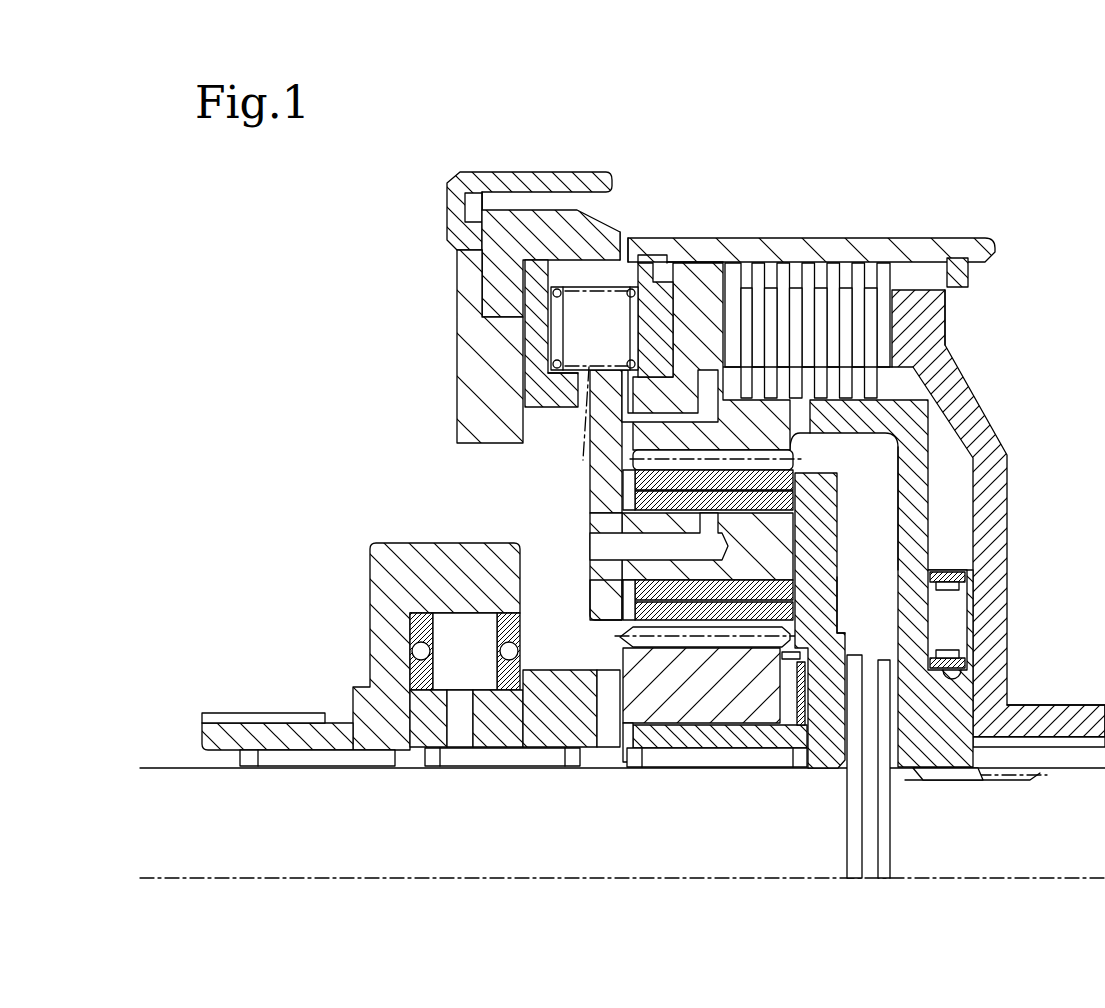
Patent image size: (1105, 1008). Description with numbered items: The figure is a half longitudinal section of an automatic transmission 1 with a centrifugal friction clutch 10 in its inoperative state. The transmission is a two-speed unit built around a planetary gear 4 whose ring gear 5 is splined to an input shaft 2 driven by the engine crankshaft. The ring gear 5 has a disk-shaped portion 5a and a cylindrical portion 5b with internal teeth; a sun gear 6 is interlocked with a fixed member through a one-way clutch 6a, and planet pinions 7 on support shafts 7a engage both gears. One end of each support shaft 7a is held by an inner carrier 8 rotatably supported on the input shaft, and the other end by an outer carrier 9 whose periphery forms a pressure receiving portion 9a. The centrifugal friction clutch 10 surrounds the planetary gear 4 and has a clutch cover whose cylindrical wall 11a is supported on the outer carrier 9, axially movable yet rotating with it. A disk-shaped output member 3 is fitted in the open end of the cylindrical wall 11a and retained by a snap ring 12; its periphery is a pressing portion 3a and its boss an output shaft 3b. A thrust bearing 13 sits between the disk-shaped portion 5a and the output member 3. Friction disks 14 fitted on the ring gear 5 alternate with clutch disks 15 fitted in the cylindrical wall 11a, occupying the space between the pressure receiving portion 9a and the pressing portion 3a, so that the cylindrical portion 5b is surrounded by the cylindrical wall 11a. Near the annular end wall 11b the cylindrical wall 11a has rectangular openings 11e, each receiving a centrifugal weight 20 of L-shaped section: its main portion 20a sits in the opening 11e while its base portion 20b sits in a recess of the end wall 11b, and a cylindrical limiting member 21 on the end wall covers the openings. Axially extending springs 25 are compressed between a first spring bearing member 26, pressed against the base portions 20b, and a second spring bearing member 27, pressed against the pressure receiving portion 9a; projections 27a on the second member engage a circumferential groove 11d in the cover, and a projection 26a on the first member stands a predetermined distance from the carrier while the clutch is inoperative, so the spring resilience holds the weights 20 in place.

The automatic transmission 1 is at (770, 148).
The input shaft 2 is at (632, 850).
The output member 3 is at (998, 518).
The pressing portion 3a is at (947, 320).
The output shaft 3b is at (1065, 705).
The planetary gear 4 is at (560, 523).
The ring gear 5 is at (886, 590).
The disk-shaped portion 5a is at (898, 533).
The cylindrical portion 5b is at (813, 440).
The sun gear 6 is at (620, 660).
The one-way clutch 6a is at (440, 655).
The planet pinions 7 is at (805, 620).
The support shafts 7a is at (588, 565).
The inner carrier 8 is at (845, 633).
The outer carrier 9 is at (590, 503).
The pressure receiving portion 9a is at (703, 290).
The centrifugal friction clutch 10 is at (807, 272).
The cylindrical wall 11a is at (870, 240).
The annular end wall 11b is at (457, 360).
The circumferential groove 11d is at (672, 262).
The rectangular openings 11e is at (628, 236).
The snap ring 12 is at (965, 287).
The thrust bearing 13 is at (950, 615).
The friction disks 14 is at (752, 262).
The clutch disks 15 is at (830, 268).
The centrifugal weights 20 is at (517, 200).
The main portion 20a is at (565, 210).
The base portion 20b is at (482, 255).
The cylindrical limiting member 21 is at (535, 172).
The springs 25 is at (585, 400).
The first spring bearing member 26 is at (540, 365).
The projection 26a is at (557, 410).
The second spring bearing member 27 is at (635, 318).
The projections 27a is at (648, 255).